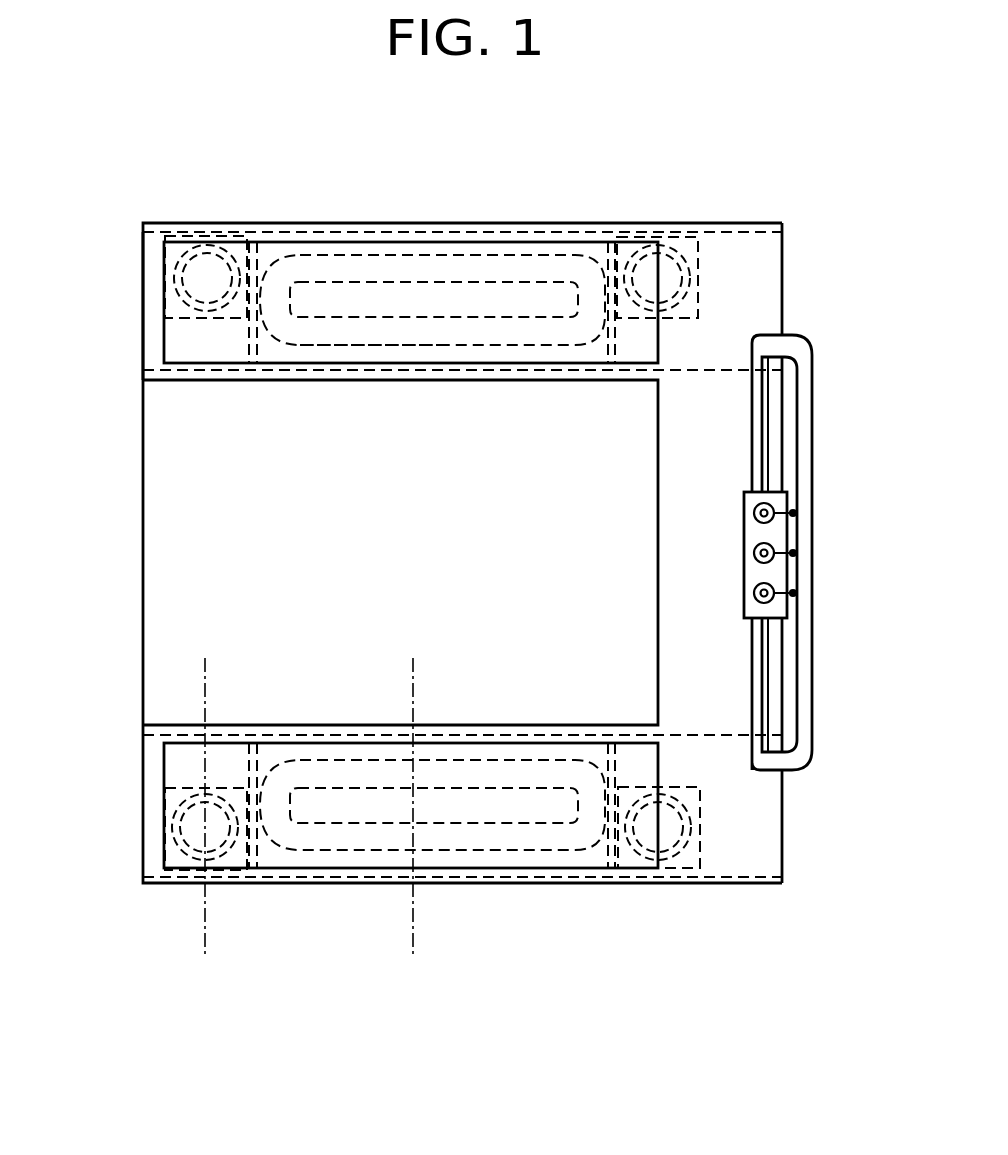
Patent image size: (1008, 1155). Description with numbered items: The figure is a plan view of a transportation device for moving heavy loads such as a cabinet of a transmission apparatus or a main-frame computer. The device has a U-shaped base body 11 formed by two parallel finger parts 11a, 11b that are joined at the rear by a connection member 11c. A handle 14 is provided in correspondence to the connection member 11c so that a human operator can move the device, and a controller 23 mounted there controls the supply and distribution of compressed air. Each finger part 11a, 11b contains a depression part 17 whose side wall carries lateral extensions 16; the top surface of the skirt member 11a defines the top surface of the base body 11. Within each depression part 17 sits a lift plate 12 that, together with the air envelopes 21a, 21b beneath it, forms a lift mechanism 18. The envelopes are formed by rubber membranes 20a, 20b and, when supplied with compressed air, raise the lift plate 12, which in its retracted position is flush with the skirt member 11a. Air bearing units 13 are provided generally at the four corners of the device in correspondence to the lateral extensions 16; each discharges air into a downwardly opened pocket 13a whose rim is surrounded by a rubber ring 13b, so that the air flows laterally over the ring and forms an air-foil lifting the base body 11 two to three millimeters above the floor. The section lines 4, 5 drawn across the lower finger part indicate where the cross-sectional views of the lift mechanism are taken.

The base body 11 is at (700, 449).
The finger part 11a is at (400, 222).
The finger part 11b is at (553, 885).
The connection member 11c is at (790, 735).
The lift plate 12 is at (460, 250).
The air bearing unit 13 is at (214, 230).
The pocket 13a is at (690, 272).
The rubber ring 13b is at (178, 222).
The handle 14 is at (806, 522).
The lateral extension 16 is at (150, 272).
The depression part 17 is at (595, 250).
The lift mechanism 18 is at (448, 350).
The rubber membrane 20a is at (421, 628).
The heater element 20b is at (360, 345).
The air envelope 21a is at (371, 552).
The air envelope 21b is at (342, 307).
The controller 23 is at (770, 602).
The section line 4 is at (203, 678).
The section line 5 is at (411, 678).